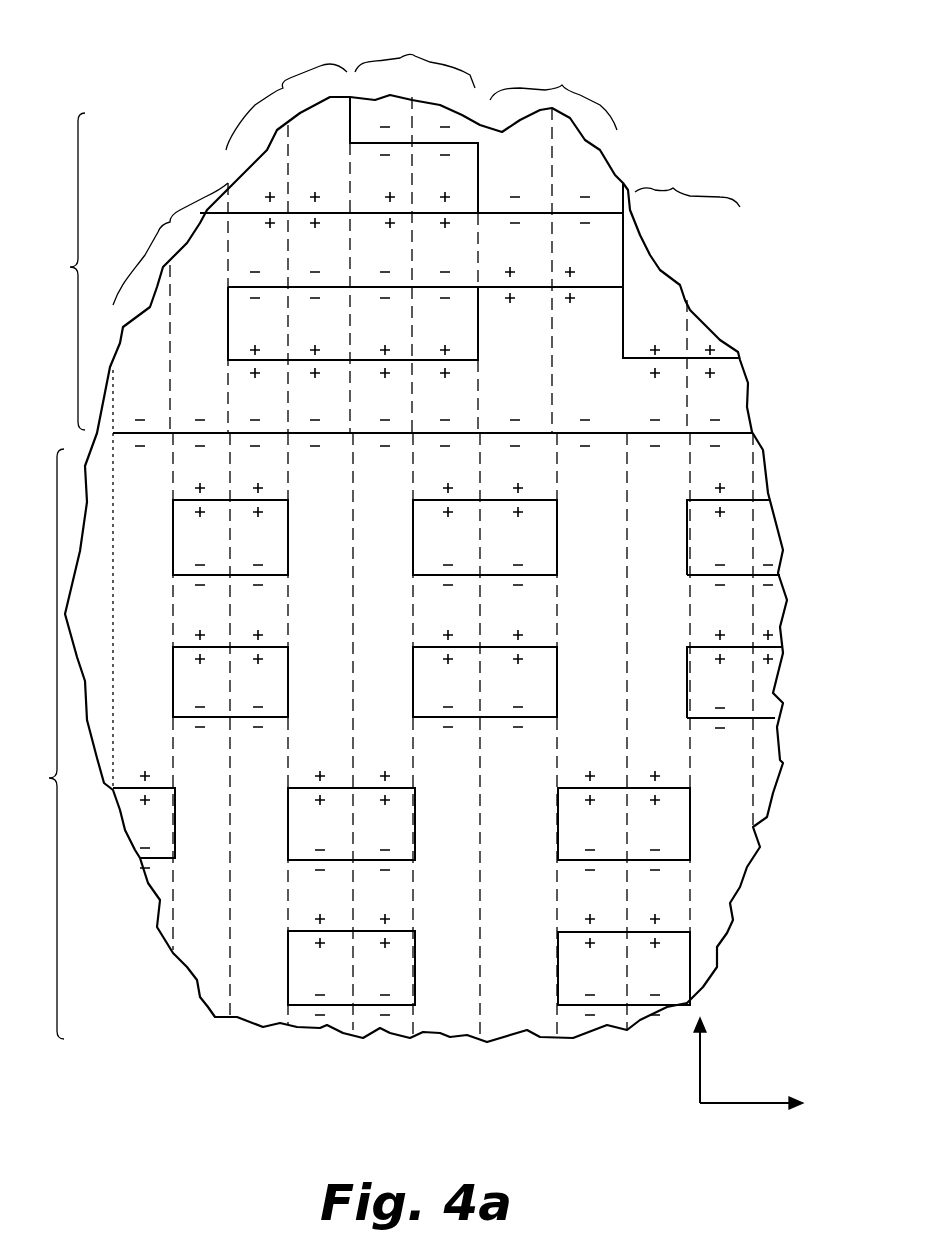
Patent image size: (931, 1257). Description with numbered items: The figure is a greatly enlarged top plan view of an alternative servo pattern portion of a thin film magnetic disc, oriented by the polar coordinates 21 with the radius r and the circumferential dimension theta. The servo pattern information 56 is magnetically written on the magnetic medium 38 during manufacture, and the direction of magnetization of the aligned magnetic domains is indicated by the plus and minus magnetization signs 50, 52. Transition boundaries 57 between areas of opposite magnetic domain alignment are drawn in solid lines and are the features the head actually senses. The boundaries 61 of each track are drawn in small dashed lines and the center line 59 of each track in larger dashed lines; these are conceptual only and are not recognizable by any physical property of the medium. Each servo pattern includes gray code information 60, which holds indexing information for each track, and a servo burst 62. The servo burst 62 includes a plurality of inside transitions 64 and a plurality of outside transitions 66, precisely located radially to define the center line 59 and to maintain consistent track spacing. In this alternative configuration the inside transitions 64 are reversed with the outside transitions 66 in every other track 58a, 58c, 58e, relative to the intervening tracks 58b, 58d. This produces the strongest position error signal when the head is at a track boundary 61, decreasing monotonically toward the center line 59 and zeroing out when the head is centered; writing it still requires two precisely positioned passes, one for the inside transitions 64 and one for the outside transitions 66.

The polar coordinates 21 is at (697, 1080).
The magnetic medium 38 is at (752, 120).
The plus magnetization sign 50 is at (567, 274).
The minus magnetization sign 52 is at (715, 422).
The servo pattern information 56 is at (795, 311).
The transition boundary 57 is at (457, 140).
The track 58a is at (170, 244).
The track 58b is at (286, 102).
The track 58c is at (415, 53).
The track 58d is at (553, 94).
The track 58e is at (687, 186).
The center line 59 is at (565, 225).
The gray code information 60 is at (55, 271).
The track boundary 61 is at (623, 272).
The servo burst 62 is at (34, 744).
The inside transitions 64 is at (569, 487).
The outside transitions 66 is at (401, 487).